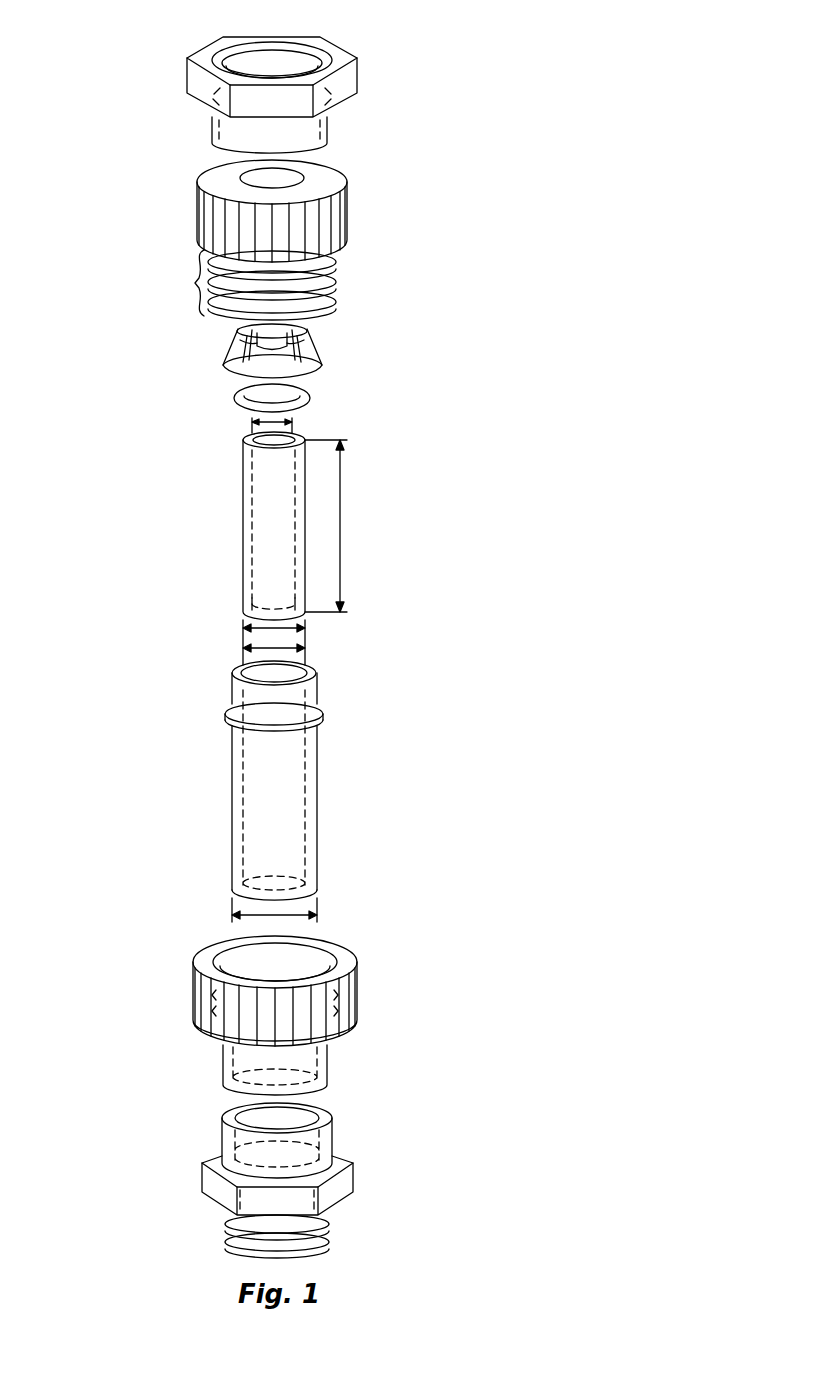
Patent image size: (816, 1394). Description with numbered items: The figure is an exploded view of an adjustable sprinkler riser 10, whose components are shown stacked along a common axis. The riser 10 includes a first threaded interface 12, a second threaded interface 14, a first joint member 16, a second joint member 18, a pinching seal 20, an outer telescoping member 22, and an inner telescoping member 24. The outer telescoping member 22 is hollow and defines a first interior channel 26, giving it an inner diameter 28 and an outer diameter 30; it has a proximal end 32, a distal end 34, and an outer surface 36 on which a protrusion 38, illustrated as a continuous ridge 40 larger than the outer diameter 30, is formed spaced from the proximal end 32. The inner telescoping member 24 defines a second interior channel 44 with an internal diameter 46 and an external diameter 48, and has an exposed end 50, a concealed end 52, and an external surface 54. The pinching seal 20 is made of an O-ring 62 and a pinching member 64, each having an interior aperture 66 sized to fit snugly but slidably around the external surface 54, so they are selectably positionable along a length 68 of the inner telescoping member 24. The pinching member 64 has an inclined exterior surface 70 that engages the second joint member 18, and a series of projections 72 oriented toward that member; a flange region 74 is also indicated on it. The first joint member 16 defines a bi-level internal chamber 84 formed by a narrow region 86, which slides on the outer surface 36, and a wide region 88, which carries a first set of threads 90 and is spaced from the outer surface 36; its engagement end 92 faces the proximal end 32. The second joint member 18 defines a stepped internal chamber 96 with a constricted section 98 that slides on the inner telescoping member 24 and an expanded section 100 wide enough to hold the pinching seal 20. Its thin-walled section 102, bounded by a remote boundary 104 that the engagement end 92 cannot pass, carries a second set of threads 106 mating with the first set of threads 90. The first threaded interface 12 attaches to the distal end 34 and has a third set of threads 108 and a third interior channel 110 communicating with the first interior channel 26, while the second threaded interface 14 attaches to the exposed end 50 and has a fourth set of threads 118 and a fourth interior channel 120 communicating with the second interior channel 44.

The adjustable sprinkler riser 10 is at (141, 105).
The first threaded interface 12 is at (285, 1181).
The second threaded interface 14 is at (277, 91).
The first joint member 16 is at (272, 1015).
The second joint member 18 is at (277, 205).
The pinching seal 20 is at (326, 389).
The outer telescoping member 22 is at (265, 803).
The inner telescoping member 24 is at (294, 533).
The first interior channel 26 is at (288, 675).
The inner diameter 28 is at (290, 648).
The outer diameter 30 is at (285, 915).
The proximal end 32 is at (240, 668).
The distal end 34 is at (232, 893).
The outer surface 36 is at (312, 758).
The protrusion 38 is at (317, 712).
The continuous ridge 40 is at (225, 715).
The second interior channel 44 is at (250, 428).
The internal diameter 46 is at (305, 440).
The external diameter 48 is at (265, 630).
The exposed end 50 is at (245, 440).
The concealed end 52 is at (248, 612).
The external surface 54 is at (262, 478).
The O-ring 62 is at (250, 397).
The pinching member 64 is at (257, 345).
The interior aperture 66 is at (302, 318).
The length 68 is at (345, 503).
The inclined exterior surface 70 is at (317, 347).
The projections 72 is at (262, 342).
The flange 74 is at (237, 367).
The bi-level internal chamber 84 is at (215, 1050).
The narrow region 86 is at (322, 1062).
The wide region 88 is at (200, 1000).
The first set of threads 90 is at (330, 962).
The engagement end 92 is at (205, 960).
The stepped internal chamber 96 is at (190, 197).
The constricted section 98 is at (340, 195).
The expanded section 100 is at (333, 260).
The thin-walled section 102 is at (265, 266).
The remote boundary 104 is at (205, 254).
The second set of threads 106 is at (330, 280).
The third set of threads 108 is at (225, 1230).
The third interior channel 110 is at (258, 1122).
The fourth set of threads 118 is at (293, 52).
The fourth interior channel 120 is at (263, 66).